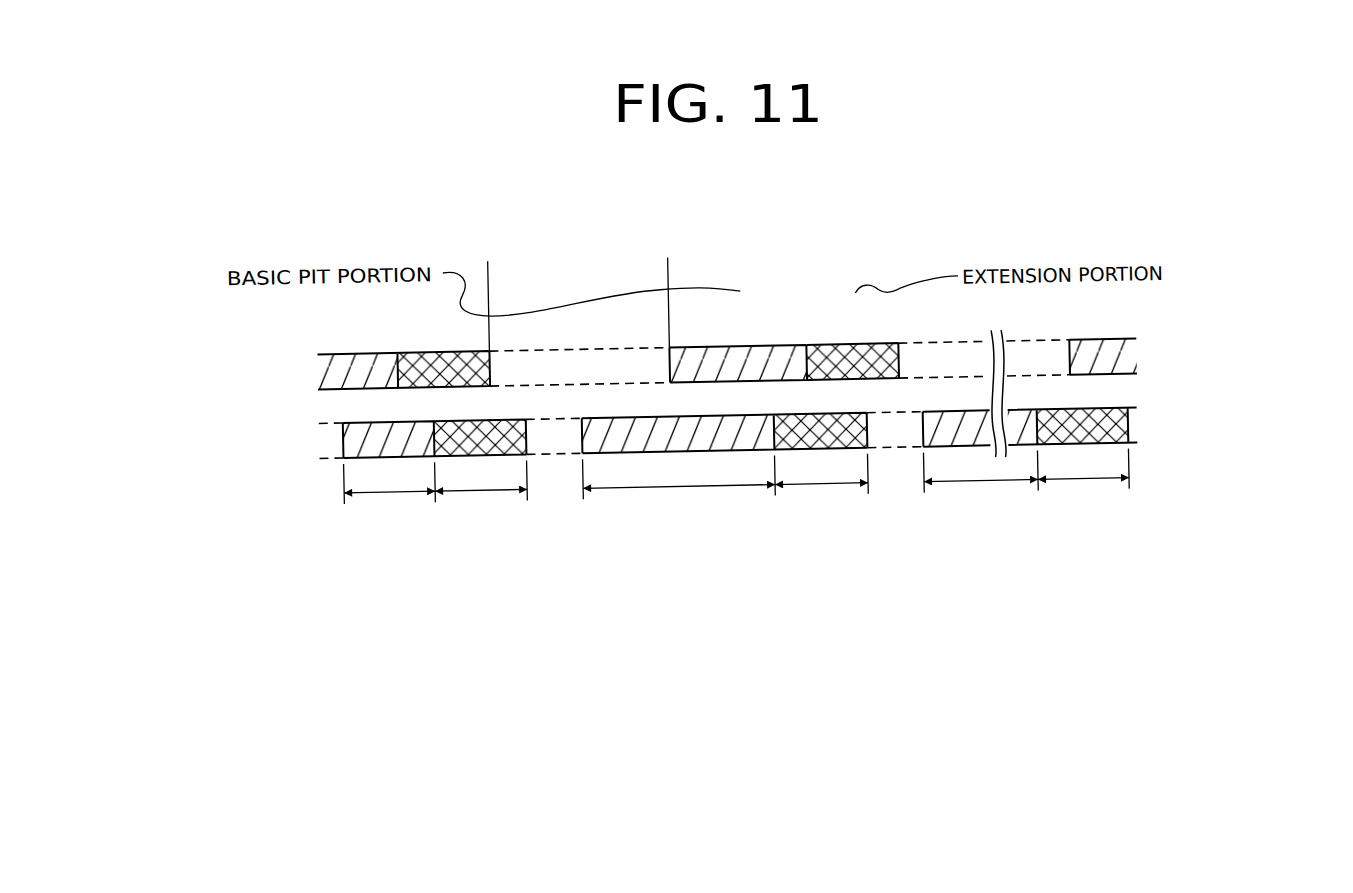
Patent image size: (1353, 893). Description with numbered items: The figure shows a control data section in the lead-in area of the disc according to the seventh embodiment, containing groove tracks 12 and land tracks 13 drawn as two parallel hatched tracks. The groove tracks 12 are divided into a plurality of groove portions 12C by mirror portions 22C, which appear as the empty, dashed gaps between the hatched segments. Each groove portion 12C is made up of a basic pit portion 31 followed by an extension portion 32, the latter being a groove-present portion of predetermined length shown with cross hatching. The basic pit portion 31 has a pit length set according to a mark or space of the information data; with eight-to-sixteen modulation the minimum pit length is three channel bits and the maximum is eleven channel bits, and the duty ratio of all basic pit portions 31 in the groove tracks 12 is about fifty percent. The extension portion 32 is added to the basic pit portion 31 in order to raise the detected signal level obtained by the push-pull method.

The groove tracks 12 is at (319, 441).
The land tracks 13 is at (824, 338).
The basic pit portion 31 is at (671, 325).
The extension portion 32 is at (852, 338).
The mirror portions 22C is at (586, 285).
The groove portions 12C is at (783, 297).